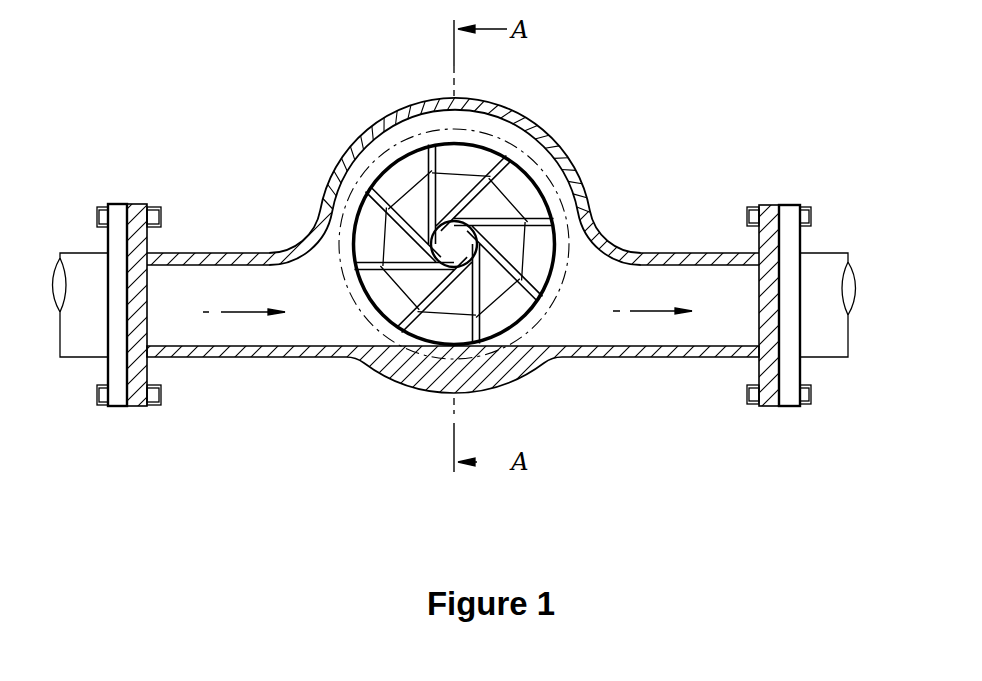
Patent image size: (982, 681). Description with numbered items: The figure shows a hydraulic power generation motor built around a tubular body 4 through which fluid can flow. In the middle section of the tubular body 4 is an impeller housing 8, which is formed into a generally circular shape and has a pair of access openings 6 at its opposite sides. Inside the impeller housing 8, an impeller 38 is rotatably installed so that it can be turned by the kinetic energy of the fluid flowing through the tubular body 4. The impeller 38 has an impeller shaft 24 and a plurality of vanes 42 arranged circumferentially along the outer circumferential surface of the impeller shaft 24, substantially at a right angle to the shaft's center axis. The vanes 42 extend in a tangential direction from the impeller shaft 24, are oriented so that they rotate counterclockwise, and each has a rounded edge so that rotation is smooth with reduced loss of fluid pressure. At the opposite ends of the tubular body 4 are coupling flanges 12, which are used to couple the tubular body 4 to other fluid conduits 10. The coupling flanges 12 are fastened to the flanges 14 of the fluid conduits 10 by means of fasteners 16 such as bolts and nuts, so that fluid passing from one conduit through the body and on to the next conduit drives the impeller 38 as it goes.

The tubular body 4 is at (676, 258).
The access openings 6 is at (352, 236).
The impeller housing 8 is at (578, 154).
The fluid conduits 10 is at (823, 258).
The coupling flanges 12 is at (765, 210).
The flanges 14 is at (791, 208).
The bolt 16 is at (753, 206).
The impeller shaft 24 is at (427, 227).
The impeller 38 is at (594, 200).
The vanes 42 is at (494, 152).